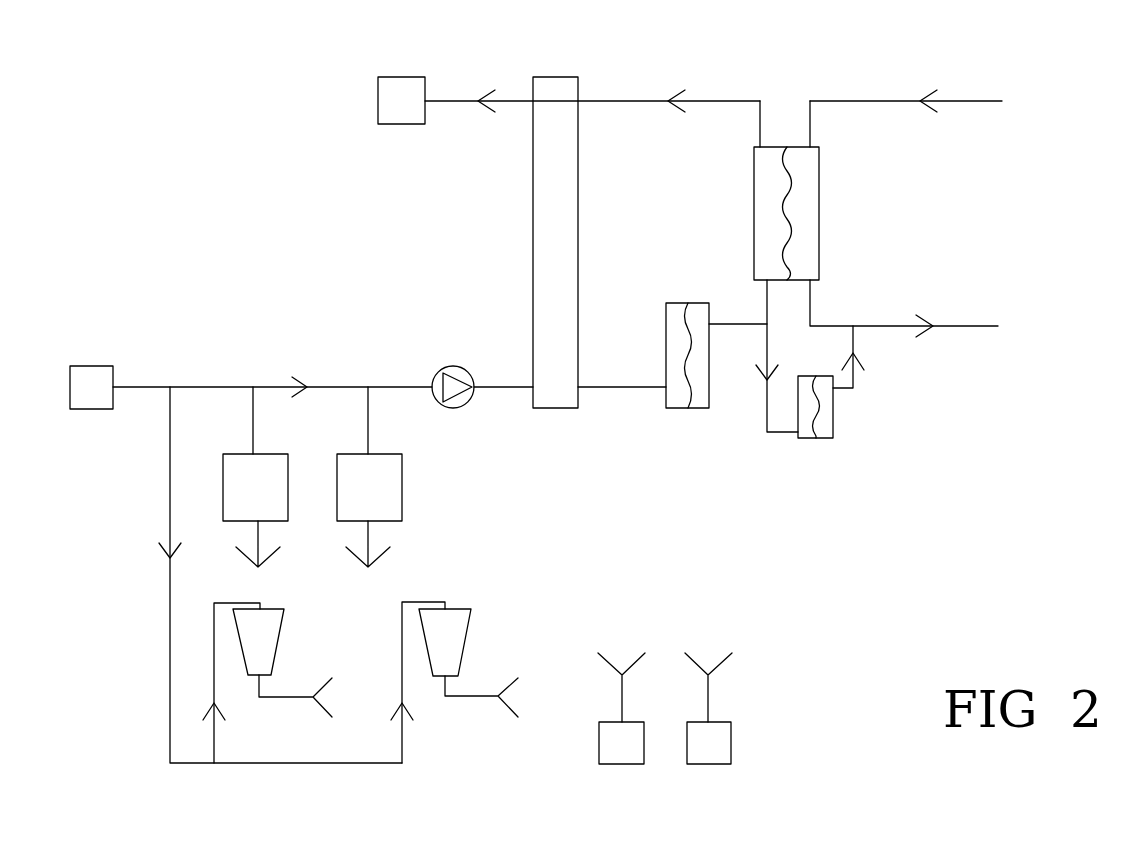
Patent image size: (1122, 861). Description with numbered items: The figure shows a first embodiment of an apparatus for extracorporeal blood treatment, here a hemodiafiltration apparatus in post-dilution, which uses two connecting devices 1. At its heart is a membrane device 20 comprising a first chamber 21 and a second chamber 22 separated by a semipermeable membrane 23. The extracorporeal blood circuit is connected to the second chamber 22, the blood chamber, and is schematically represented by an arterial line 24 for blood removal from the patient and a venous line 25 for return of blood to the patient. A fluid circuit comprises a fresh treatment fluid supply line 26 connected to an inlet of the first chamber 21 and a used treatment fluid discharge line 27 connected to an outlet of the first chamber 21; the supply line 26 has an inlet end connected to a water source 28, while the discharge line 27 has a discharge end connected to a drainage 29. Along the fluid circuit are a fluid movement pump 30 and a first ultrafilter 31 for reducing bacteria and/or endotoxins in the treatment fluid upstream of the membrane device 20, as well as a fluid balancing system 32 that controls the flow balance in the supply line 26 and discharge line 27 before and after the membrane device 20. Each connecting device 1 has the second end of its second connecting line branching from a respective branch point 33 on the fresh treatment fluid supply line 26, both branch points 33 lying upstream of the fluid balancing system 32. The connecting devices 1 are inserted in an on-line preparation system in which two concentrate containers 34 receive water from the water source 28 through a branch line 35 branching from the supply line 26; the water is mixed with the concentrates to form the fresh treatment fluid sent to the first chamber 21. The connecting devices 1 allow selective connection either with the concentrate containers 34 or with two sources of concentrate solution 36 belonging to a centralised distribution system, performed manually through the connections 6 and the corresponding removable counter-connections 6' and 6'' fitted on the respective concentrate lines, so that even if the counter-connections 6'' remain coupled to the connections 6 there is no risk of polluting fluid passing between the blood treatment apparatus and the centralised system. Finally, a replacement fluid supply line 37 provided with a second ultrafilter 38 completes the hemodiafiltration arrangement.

The connecting device 1 is at (266, 501).
The connection 6 is at (350, 556).
The removable counter-connection 6' is at (396, 732).
The removable counter-connection 6'' is at (671, 657).
The membrane device 20 is at (795, 191).
The first chamber 21 is at (770, 200).
The second chamber 22 is at (805, 252).
The semipermeable membrane 23 is at (793, 160).
The arterial line 24 is at (958, 101).
The venous line 25 is at (965, 326).
The fresh treatment fluid supply line 26 is at (612, 387).
The used treatment fluid discharge line 27 is at (632, 101).
The water source 28 is at (95, 366).
The drainage 29 is at (378, 93).
The fluid movement pump 30 is at (457, 368).
The first ultrafilter 31 is at (707, 408).
The fluid balancing system 32 is at (533, 207).
The branch point 33 is at (253, 387).
The concentrate container 34 is at (280, 635).
The branch line 35 is at (170, 518).
The source of concentrate solution 36 is at (620, 764).
The replacement fluid supply line 37 is at (773, 432).
The second ultrafilter 38 is at (835, 433).